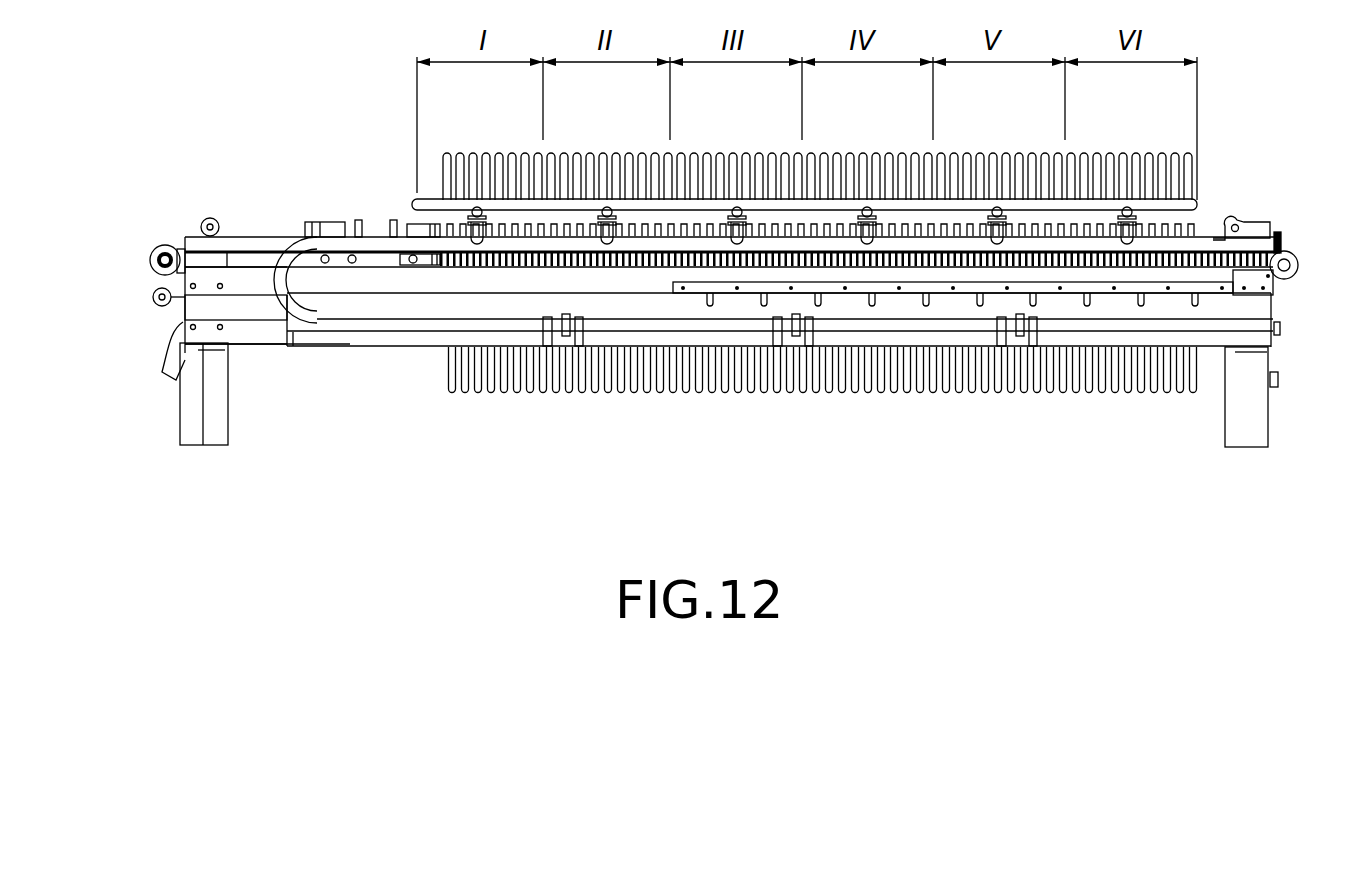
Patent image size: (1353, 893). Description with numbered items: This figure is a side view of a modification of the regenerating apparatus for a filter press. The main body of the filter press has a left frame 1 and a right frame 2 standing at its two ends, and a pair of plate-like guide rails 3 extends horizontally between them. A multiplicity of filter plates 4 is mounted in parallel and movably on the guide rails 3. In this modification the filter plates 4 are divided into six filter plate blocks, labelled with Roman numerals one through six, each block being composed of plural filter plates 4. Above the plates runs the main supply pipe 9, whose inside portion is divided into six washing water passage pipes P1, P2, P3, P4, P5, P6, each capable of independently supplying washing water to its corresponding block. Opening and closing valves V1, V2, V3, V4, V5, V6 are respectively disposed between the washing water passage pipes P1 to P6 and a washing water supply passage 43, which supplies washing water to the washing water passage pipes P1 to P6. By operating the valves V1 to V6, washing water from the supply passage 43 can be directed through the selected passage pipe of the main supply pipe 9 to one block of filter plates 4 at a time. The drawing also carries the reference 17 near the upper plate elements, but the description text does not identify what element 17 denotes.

The left frame 1 is at (207, 438).
The right frame 2 is at (1266, 437).
The guide rails 3 is at (258, 346).
The filter plates 4 is at (447, 352).
The main supply pipe 9 is at (415, 202).
The plate nozzles 17 is at (445, 153).
The washing water supply passage 43 is at (1213, 242).
The opening and closing valve V1 is at (478, 205).
The opening and closing valve V2 is at (607, 207).
The opening and closing valve V3 is at (737, 207).
The opening and closing valve V4 is at (867, 207).
The opening and closing valve V5 is at (997, 207).
The opening and closing valve V6 is at (1127, 207).
The washing water passage pipe P1 is at (425, 200).
The washing water passage pipe P2 is at (650, 198).
The washing water passage pipe P3 is at (765, 198).
The washing water passage pipe P4 is at (895, 198).
The washing water passage pipe P5 is at (1035, 198).
The washing water passage pipe P6 is at (1167, 198).